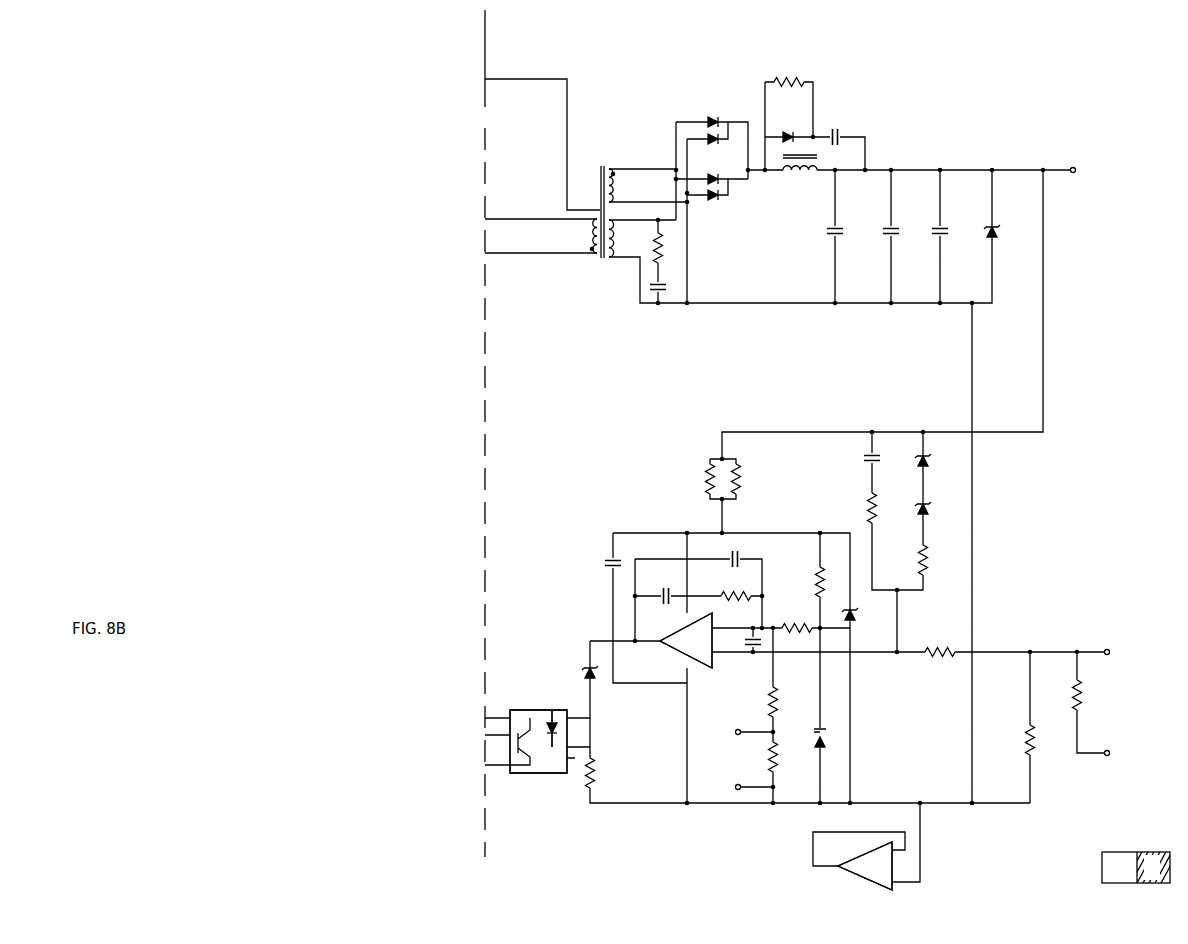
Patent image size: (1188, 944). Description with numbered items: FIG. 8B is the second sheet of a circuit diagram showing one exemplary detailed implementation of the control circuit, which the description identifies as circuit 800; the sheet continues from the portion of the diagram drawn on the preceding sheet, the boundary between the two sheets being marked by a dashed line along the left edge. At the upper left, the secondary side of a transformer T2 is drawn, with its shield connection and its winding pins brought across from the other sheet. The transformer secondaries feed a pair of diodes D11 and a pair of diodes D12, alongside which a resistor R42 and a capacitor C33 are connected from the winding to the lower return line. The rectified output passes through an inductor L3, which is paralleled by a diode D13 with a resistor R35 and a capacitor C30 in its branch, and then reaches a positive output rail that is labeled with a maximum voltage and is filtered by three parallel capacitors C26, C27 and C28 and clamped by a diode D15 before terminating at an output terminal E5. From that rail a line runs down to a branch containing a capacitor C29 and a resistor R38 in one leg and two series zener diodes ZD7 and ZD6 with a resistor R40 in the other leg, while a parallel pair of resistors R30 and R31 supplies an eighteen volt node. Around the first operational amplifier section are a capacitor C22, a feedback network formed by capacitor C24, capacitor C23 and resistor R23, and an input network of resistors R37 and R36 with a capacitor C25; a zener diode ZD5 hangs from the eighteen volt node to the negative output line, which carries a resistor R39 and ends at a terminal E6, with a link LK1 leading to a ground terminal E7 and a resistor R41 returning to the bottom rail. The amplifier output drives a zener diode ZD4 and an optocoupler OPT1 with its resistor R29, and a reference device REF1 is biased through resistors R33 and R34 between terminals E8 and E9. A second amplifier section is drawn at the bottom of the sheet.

The circuit 800 is at (151, 545).
The transformer T2 is at (606, 202).
The rectifier diode MUR1620 D11 is at (717, 109).
The rectifier diode MUR1620 D12 is at (724, 209).
The resistor 330 R42 is at (686, 264).
The capacitor 100 PF C33 is at (662, 316).
The resistor 47K R35 is at (789, 65).
The diode D13 is at (789, 129).
The capacitor 680 PF C30 is at (856, 118).
The inductor 470uH L3 is at (793, 186).
The capacitor 4.7uf 63V C26 is at (848, 245).
The capacitor 4.7uf 63V C27 is at (904, 245).
The capacitor 4.7uf 63V C28 is at (953, 245).
The zener diode D15 is at (1009, 223).
The +V.out terminal E5 is at (1086, 173).
The capacitor 0.1uf 100V C29 is at (855, 460).
The resistor 100K R38 is at (853, 504).
The zener diode 5.1V ZD7 is at (939, 469).
The zener diode 47V ZD6 is at (941, 526).
The resistor 100K R40 is at (905, 560).
The resistor 2.2K 1W R30 is at (679, 480).
The resistor R31 is at (753, 478).
The capacitor 0.1uf C22 is at (599, 563).
The capacitor 0.01uf C24 is at (729, 554).
The capacitor 0.1uf C23 is at (664, 596).
The resistor 10k R23 is at (739, 596).
The resistor 10K R37 is at (808, 573).
The resistor 100K R36 is at (798, 627).
The capacitor 470pf C25 is at (780, 657).
The zener diode 18V ZD5 is at (867, 621).
The resistor 8.2K R39 is at (940, 675).
The -V.out terminal E6 is at (1122, 654).
The link LK1 is at (1094, 694).
The GND terminal E7 is at (1121, 755).
The resistor 0.1 1W R41 is at (1008, 749).
The zener diode 5.1V ZD4 is at (574, 672).
The optocoupler OPT1 is at (538, 755).
The resistor 470 ohm R29 is at (619, 773).
The terminal E8 is at (726, 732).
The resistor 8.2K R33 is at (757, 702).
The resistor 470 ohm R34 is at (746, 760).
The terminal E9 is at (726, 791).
The voltage reference 2.5V REF1 is at (814, 740).